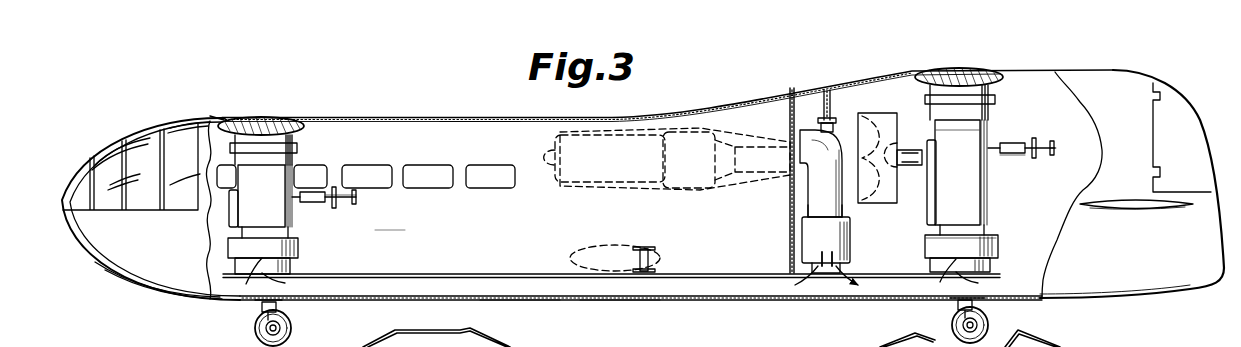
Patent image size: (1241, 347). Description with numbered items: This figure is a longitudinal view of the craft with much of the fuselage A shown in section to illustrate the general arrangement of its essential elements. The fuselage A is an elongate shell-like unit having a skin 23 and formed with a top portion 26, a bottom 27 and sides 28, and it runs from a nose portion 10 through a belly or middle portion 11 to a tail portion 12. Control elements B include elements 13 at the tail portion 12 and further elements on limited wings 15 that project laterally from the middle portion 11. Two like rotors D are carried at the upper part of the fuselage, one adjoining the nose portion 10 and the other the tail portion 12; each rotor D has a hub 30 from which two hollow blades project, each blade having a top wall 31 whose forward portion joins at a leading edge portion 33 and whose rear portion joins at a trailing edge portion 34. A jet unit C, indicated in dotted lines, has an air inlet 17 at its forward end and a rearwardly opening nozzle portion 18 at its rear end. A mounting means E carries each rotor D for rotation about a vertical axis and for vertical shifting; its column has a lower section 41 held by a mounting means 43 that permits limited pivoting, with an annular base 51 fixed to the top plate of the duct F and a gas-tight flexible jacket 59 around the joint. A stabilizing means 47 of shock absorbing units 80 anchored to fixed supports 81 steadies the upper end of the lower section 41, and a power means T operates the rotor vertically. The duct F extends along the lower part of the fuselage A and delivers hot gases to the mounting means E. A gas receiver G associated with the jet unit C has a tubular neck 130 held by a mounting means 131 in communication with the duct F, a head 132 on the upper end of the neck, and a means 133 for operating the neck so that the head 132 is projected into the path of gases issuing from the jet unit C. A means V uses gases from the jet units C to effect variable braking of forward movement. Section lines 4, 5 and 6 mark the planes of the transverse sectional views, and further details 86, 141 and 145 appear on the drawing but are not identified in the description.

The nose portion 10 is at (152, 300).
The middle portion 11 is at (598, 300).
The tail portion 12 is at (1125, 258).
The control elements 13 is at (1125, 212).
The limited wings 15 is at (690, 262).
The air inlet 17 is at (555, 182).
The nozzle portion 18 is at (790, 183).
The skin 23 is at (434, 118).
The top portion 26 is at (473, 118).
The bottom 27 is at (526, 299).
The sides 28 is at (390, 221).
The hub 30 is at (293, 140).
The top wall 31 is at (245, 118).
The leading edge portion 33 is at (215, 118).
The trailing edge portion 34 is at (320, 118).
The lower section 41 is at (968, 210).
The mounting means 43 is at (998, 243).
The stabilizing means 47 is at (315, 190).
The base 51 is at (995, 264).
The flexible jacket 59 is at (303, 253).
The shock absorbing units 80 is at (330, 203).
The fixed supports 81 is at (1052, 156).
The valve cylinder 86 is at (1017, 154).
The tubular neck 130 is at (822, 208).
The mounting means 131 is at (815, 241).
The head 132 is at (792, 102).
The operating means 133 is at (830, 131).
The wing 141 is at (599, 342).
The tail wing 145 is at (1139, 342).
The section line 4 is at (822, 53).
The section line 5 is at (900, 53).
The section line 6 is at (790, 157).
The fuselage A is at (563, 112).
The control elements B is at (1176, 75).
The jet units C is at (592, 190).
The rotors D is at (286, 118).
The mounting means E is at (288, 213).
The duct F is at (388, 272).
The gas receivers G is at (846, 205).
The power means T is at (224, 214).
The braking means V is at (890, 102).